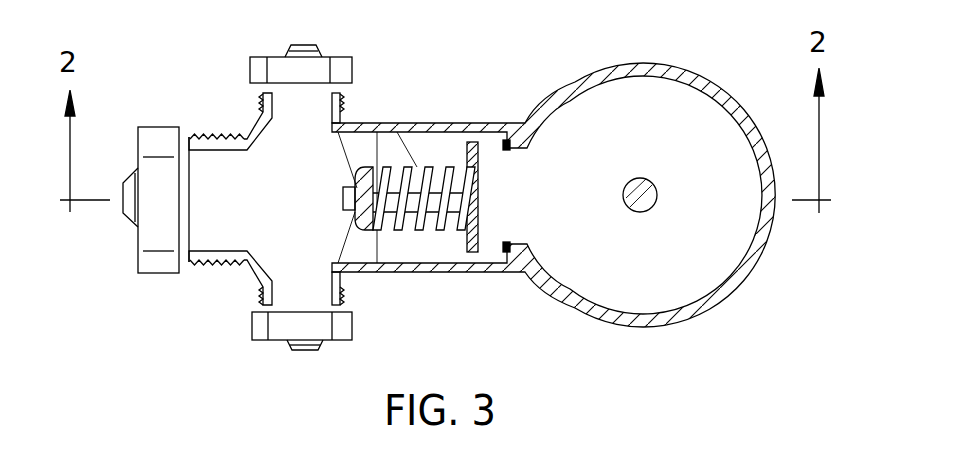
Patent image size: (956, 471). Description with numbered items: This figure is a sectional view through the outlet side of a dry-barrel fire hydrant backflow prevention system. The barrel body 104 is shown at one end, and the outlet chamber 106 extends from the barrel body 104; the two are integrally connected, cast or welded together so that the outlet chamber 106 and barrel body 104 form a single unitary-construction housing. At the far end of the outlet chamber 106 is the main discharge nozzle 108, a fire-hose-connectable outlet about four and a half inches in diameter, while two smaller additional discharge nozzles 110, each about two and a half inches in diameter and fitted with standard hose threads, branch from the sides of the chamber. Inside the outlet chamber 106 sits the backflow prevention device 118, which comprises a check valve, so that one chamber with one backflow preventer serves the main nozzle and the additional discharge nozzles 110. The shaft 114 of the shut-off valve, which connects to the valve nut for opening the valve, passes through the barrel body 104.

The barrel body 104 is at (645, 62).
The outlet chamber 106 is at (473, 122).
The discharge nozzle 108 is at (197, 138).
The additional discharge nozzle 110 is at (260, 106).
The shaft 114 is at (645, 177).
The backflow prevention device 118 is at (418, 167).